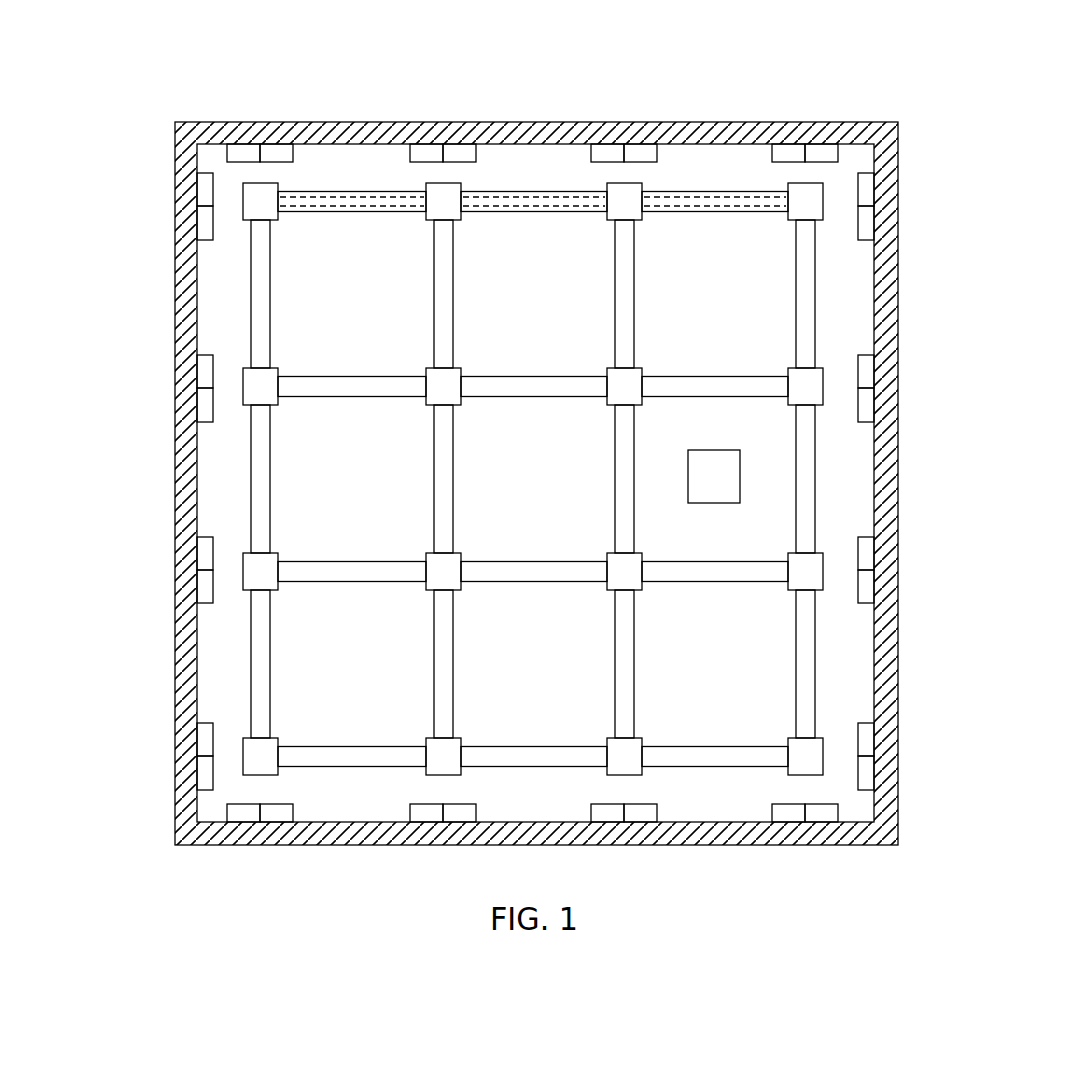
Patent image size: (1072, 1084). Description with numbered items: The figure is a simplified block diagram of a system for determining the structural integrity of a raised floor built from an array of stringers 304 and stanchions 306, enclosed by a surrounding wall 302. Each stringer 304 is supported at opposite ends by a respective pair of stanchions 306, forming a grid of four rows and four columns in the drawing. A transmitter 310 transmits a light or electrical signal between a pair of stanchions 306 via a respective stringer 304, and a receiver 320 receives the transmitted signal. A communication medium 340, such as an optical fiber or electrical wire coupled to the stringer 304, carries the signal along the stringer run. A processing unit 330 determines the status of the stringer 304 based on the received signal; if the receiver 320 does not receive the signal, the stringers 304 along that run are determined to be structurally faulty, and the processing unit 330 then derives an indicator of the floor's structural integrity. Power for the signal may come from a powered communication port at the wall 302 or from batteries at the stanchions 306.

The wall 302 is at (898, 627).
The stringer 304 is at (815, 698).
The stanchion 306 is at (823, 765).
The transmitter 310 is at (180, 190).
The receiver 320 is at (180, 233).
The processing unit 330 is at (740, 475).
The communication medium 340 is at (710, 196).